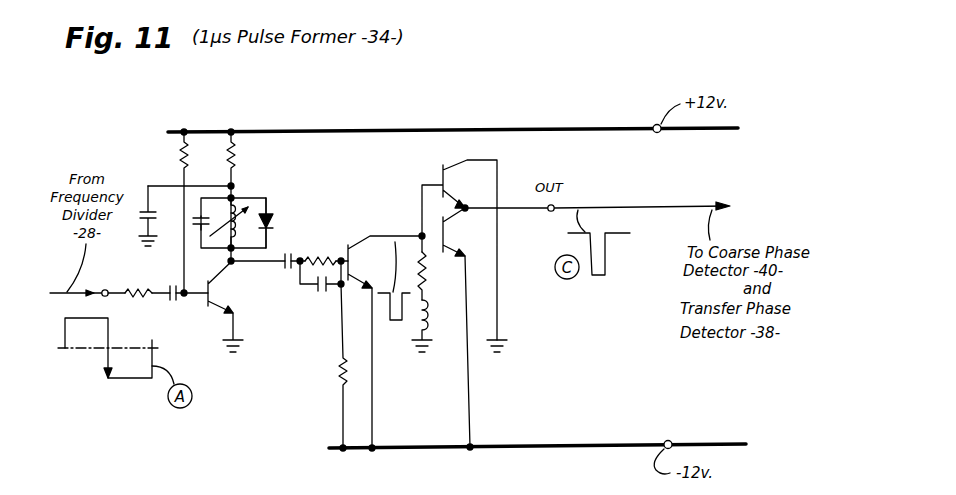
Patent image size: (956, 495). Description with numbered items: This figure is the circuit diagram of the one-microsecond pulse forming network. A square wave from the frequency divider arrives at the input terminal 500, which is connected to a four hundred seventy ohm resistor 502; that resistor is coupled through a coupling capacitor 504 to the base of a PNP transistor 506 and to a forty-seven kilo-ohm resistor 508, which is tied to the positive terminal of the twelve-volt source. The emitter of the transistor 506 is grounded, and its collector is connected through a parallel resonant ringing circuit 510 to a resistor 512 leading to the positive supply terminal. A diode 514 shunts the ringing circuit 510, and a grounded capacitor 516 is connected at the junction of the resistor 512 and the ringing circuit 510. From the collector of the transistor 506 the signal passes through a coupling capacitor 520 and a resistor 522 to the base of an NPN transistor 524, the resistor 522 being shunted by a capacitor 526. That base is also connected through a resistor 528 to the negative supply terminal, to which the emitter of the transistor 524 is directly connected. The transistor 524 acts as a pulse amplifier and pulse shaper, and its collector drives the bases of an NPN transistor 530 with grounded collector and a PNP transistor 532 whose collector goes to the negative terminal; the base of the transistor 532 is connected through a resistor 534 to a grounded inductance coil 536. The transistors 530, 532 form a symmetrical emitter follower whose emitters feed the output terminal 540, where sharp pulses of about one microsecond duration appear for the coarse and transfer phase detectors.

The input terminal 500 is at (108, 296).
The resistor 502 is at (130, 290).
The coupling capacitor 504 is at (168, 291).
The PNP transistor 506 is at (205, 318).
The resistor 508 is at (180, 165).
The parallel resonant ringing circuit 510 is at (205, 252).
The resistor 512 is at (236, 170).
The diode 514 is at (273, 218).
The capacitor 516 is at (152, 219).
The coupling capacitor 520 is at (286, 250).
The resistor 522 is at (310, 256).
The NPN transistor 524 is at (345, 244).
The capacitor 526 is at (314, 292).
The resistor 528 is at (338, 378).
The NPN transistor 530 is at (441, 176).
The PNP transistor 532 is at (437, 262).
The resistor 534 is at (420, 258).
The inductance coil 536 is at (428, 316).
The output terminal 540 is at (553, 213).